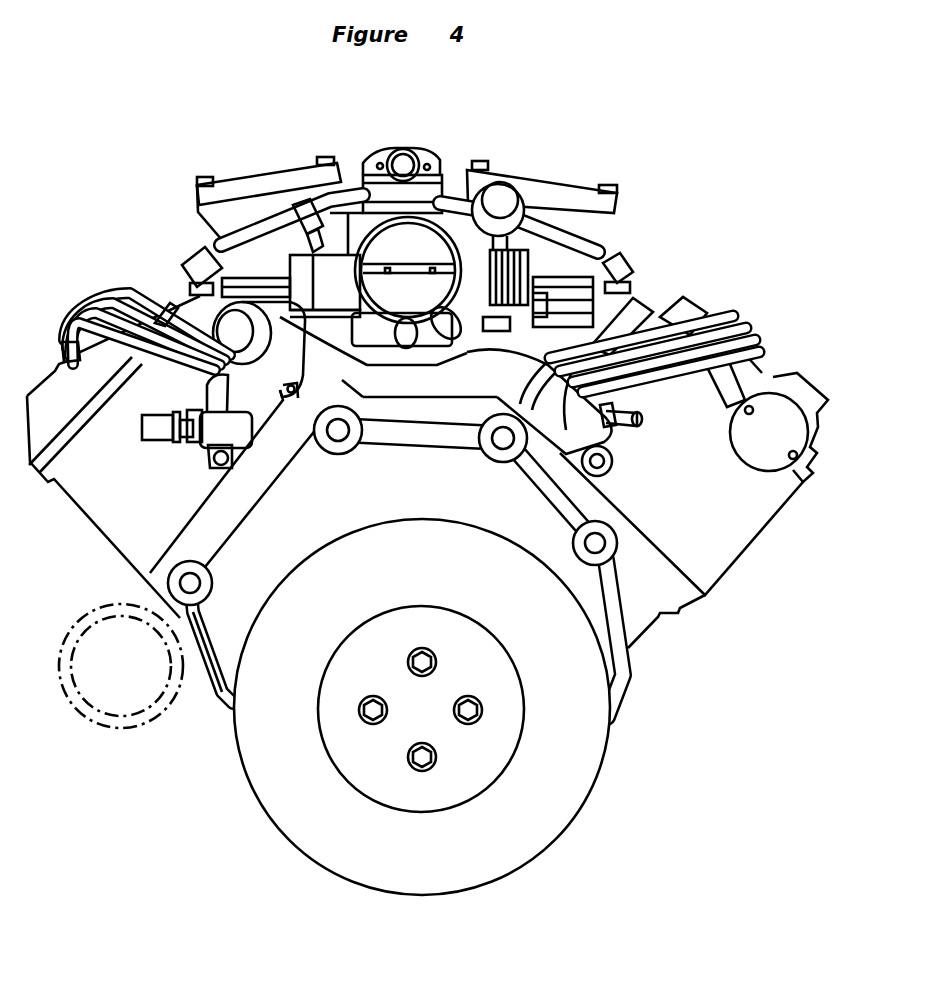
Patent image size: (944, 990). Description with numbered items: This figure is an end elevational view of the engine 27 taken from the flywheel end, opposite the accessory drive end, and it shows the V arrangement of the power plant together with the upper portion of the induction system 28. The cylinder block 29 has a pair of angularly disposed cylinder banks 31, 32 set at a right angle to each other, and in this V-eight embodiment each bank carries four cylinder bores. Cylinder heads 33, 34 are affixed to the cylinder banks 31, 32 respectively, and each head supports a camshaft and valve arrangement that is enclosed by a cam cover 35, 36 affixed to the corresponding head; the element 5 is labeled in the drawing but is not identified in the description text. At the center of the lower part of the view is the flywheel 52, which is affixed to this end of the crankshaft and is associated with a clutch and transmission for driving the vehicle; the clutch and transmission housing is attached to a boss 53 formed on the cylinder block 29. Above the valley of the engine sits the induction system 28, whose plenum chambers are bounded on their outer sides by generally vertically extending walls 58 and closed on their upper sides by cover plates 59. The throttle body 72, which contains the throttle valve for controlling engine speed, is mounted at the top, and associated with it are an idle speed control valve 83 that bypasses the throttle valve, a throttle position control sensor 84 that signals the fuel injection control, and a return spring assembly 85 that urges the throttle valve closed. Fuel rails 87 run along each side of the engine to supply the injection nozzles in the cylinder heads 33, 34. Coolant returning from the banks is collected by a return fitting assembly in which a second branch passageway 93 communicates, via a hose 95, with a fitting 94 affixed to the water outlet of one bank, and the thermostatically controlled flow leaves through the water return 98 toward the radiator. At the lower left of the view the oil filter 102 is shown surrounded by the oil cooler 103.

The spark plug wires (right bank) 5 is at (733, 313).
The engine 27 is at (675, 720).
The induction system 28 is at (648, 183).
The cylinder block 29 is at (220, 700).
The cylinder bank 31 is at (203, 540).
The cylinder bank 32 is at (680, 605).
The cylinder head 33 is at (100, 518).
The cylinder head 34 is at (757, 512).
The cam cover 35 is at (53, 390).
The cam cover 36 is at (750, 385).
The flywheel 52 is at (567, 793).
The boss 53 is at (617, 625).
The vertically extending wall 58 is at (200, 235).
The cover plate 59 is at (230, 180).
The throttle body 72 is at (368, 198).
The idle speed control valve 83 is at (405, 150).
The throttle position control sensor 84 is at (290, 277).
The return spring assembly 85 is at (540, 250).
The fuel rail 87 is at (190, 288).
The second branch passageway 93 is at (307, 433).
The fitting 94 is at (613, 438).
The hose 95 is at (533, 463).
The water return 98 is at (213, 468).
The oil filter 102 is at (163, 693).
The oil cooler 103 is at (80, 715).